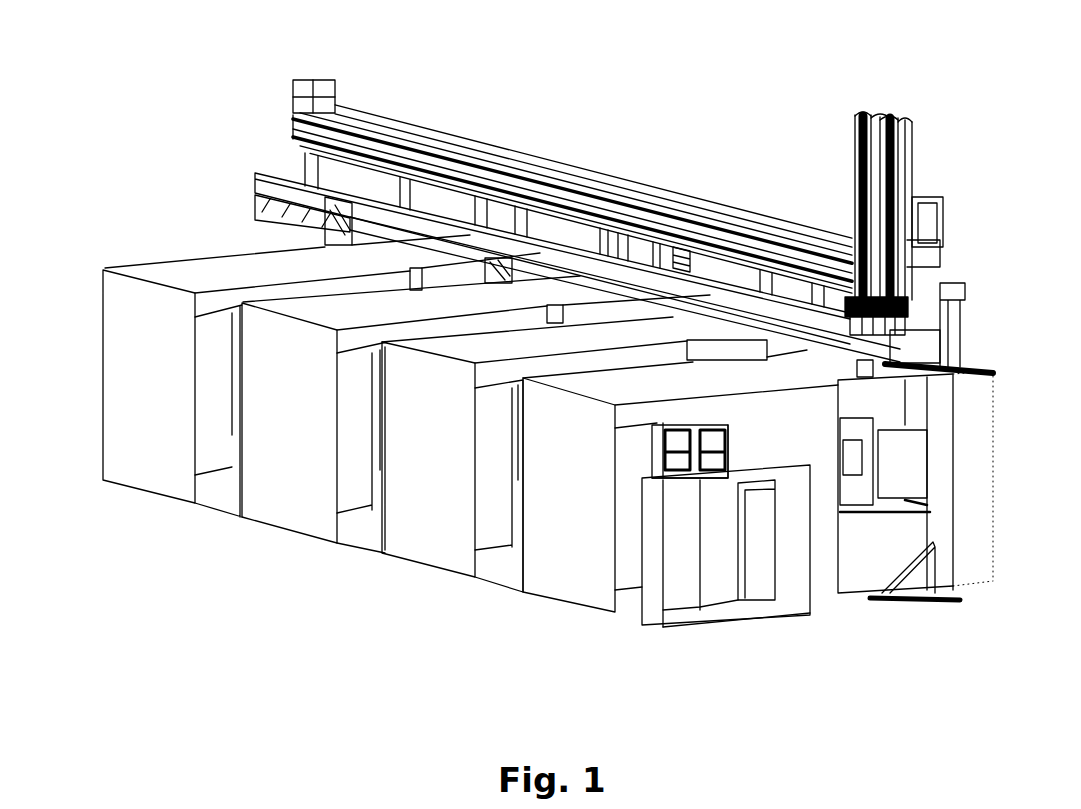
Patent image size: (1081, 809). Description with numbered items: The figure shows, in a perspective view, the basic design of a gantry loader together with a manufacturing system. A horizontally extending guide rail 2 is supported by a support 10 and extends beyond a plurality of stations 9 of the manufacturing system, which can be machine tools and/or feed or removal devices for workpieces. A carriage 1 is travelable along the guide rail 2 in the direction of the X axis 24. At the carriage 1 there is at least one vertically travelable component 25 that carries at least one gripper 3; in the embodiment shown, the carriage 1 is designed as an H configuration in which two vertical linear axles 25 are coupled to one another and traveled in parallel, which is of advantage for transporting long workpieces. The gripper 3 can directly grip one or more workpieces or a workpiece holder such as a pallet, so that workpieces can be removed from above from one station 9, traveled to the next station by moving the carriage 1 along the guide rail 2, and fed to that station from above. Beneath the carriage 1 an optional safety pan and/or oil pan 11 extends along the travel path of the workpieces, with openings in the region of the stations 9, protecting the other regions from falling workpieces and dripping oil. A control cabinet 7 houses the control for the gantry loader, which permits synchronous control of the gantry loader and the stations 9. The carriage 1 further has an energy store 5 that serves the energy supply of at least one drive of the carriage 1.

The carriage 1 is at (987, 60).
The guide rail 2 is at (291, 116).
The gripper 3 is at (905, 331).
The energy store 5 is at (943, 200).
The control cabinet 7 is at (682, 618).
The machine tool 9 is at (135, 472).
The support 10 is at (940, 598).
The safety pan/oil pan 11 is at (265, 176).
The X axis 24 is at (689, 180).
The Z axis 25 is at (843, 155).